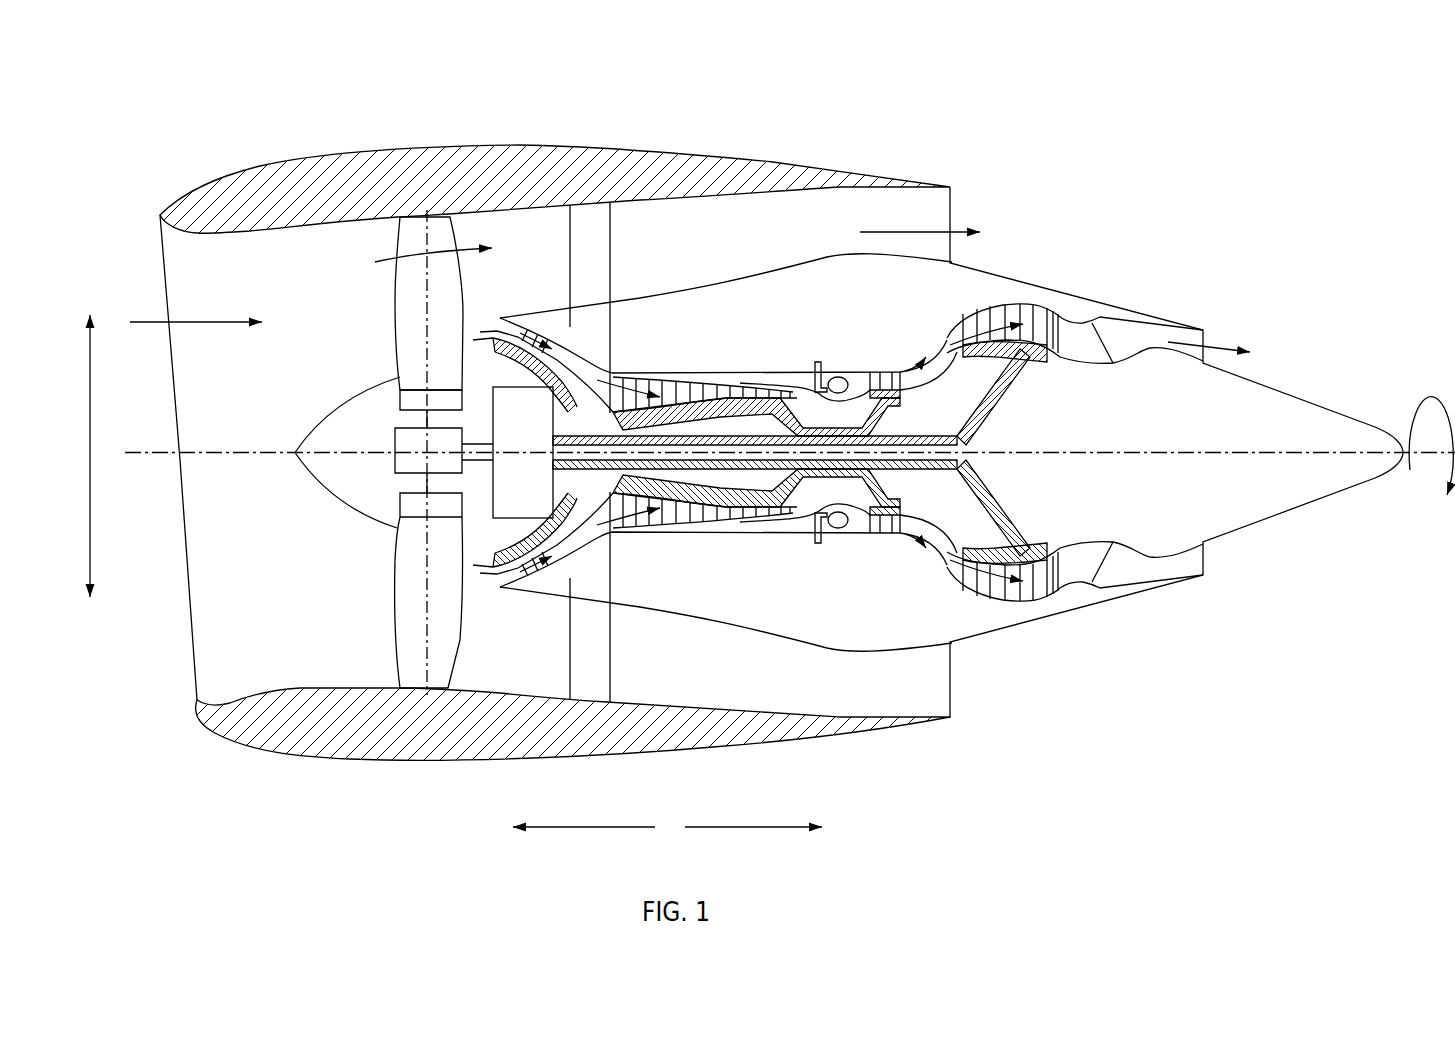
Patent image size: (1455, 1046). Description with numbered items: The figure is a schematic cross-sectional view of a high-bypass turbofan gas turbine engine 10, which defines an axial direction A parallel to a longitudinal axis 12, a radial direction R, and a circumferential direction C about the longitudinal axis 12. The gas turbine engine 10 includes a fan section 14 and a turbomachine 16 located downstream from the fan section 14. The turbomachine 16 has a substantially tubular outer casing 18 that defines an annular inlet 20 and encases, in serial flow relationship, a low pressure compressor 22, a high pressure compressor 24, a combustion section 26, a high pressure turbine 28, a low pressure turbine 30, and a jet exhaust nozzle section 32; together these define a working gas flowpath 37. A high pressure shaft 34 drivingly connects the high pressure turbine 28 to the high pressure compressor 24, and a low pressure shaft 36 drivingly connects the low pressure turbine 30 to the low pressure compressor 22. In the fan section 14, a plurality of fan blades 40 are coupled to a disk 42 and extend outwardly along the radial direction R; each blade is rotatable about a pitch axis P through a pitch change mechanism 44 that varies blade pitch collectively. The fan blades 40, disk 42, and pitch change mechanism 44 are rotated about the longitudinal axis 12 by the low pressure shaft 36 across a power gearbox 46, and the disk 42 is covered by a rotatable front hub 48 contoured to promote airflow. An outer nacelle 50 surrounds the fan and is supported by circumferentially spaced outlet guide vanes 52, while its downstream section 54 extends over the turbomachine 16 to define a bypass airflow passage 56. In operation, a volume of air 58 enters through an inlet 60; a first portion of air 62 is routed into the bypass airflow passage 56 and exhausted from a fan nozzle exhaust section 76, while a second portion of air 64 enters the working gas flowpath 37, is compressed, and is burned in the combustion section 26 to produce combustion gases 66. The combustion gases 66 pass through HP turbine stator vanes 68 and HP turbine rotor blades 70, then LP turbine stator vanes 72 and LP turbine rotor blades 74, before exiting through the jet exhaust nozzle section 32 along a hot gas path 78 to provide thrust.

The gas turbine engine 10 is at (1118, 155).
The longitudinal axis 12 is at (1150, 450).
The fan section 14 is at (350, 237).
The turbomachine 16 is at (740, 280).
The outer casing 18 is at (797, 637).
The annular inlet 20 is at (510, 573).
The low pressure compressor 22 is at (560, 522).
The high pressure compressor 24 is at (632, 523).
The combustion section 26 is at (830, 530).
The high pressure turbine 28 is at (907, 533).
The low pressure turbine 30 is at (1045, 603).
The jet exhaust nozzle section 32 is at (1110, 573).
The high pressure shaft 34 is at (840, 424).
The low pressure shaft 36 is at (945, 425).
The working gas flowpath 37 is at (598, 530).
The fan blades 40 is at (398, 630).
The disk 42 is at (413, 402).
The pitch change mechanism 44 is at (393, 433).
The power gearbox 46 is at (541, 405).
The front hub 48 is at (310, 467).
The outer nacelle 50 is at (450, 757).
The outlet guide vanes 52 is at (610, 237).
The downstream section 54 is at (873, 168).
The bypass airflow passage 56 is at (780, 241).
The volume of air 58 is at (208, 318).
The inlet 60 is at (195, 696).
The first portion of air 62 is at (415, 257).
The second portion of air 64 is at (483, 333).
The combustion gases 66 is at (890, 368).
The HP turbine stator vanes 68 is at (862, 527).
The HP turbine rotor blades 70 is at (880, 508).
The LP turbine stator vanes 72 is at (972, 597).
The LP turbine rotor blades 74 is at (972, 583).
The fan nozzle exhaust section 76 is at (942, 203).
The hot gas path 78 is at (930, 347).
The pitch axis P is at (422, 233).
The radial direction R is at (90, 456).
The axial direction A is at (667, 827).
The circumferential direction C is at (1431, 471).